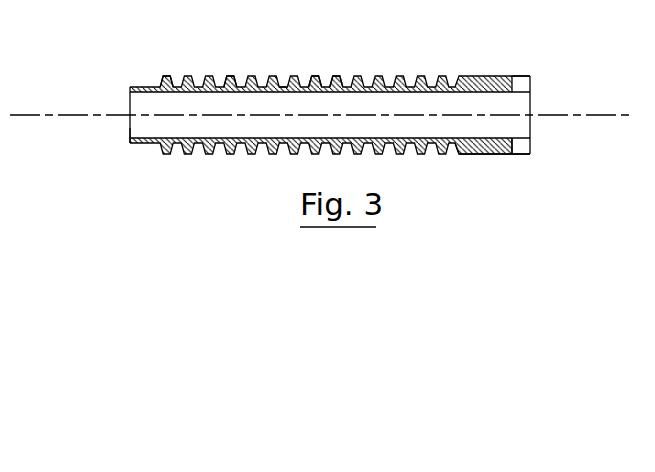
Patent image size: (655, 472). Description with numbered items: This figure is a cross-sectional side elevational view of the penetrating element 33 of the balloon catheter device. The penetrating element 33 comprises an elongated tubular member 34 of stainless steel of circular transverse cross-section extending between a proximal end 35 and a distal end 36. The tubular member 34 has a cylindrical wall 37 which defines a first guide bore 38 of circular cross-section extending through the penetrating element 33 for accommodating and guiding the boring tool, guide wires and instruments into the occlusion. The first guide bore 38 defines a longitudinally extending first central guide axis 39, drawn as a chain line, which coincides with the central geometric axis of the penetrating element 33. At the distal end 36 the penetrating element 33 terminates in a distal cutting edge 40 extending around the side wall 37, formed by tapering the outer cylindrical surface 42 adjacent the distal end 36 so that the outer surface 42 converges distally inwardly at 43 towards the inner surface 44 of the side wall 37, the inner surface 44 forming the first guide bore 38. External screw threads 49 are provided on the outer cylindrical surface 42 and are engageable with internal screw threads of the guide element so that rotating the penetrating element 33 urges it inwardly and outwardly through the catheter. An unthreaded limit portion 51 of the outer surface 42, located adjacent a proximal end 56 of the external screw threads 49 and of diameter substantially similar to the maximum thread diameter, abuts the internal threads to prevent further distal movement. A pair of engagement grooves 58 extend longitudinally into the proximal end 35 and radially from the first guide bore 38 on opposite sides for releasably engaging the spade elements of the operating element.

The penetrating element 33 is at (312, 78).
The elongated tubular member 34 is at (398, 78).
The proximal end 35 is at (532, 98).
The distal end 36 is at (128, 98).
The cylindrical wall 37 is at (285, 80).
The first guide bore 38 is at (416, 103).
The first central guide axis 39 is at (590, 117).
The distal cutting edge 40 is at (130, 136).
The outer cylindrical surface 42 is at (230, 78).
The distally inwardly converging taper 43 is at (162, 77).
The inner surface 44 is at (213, 140).
The external screw threads 49 is at (337, 78).
The unthreaded limit portion 51 is at (483, 153).
The proximal end of the external screw threads 56 is at (455, 147).
The engagement grooves 58 is at (519, 82).